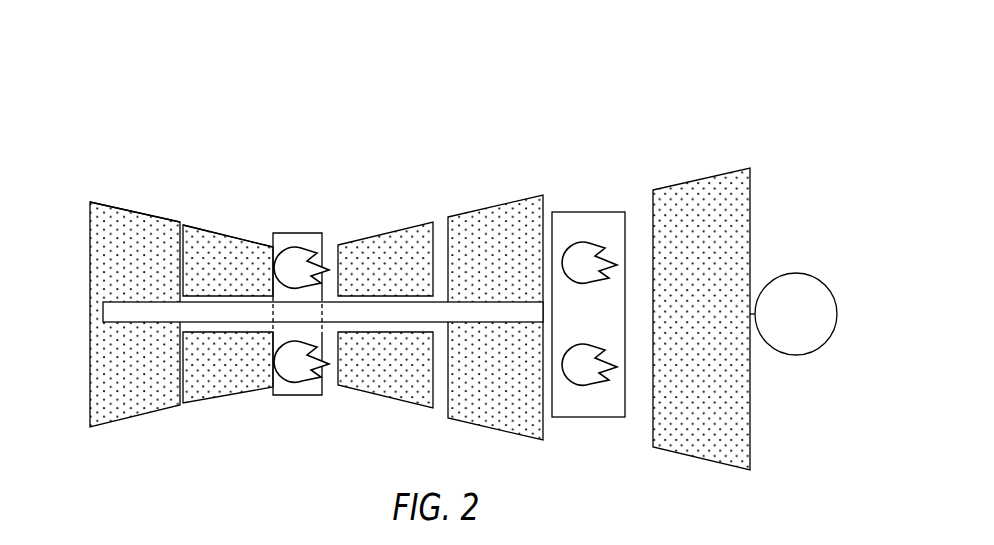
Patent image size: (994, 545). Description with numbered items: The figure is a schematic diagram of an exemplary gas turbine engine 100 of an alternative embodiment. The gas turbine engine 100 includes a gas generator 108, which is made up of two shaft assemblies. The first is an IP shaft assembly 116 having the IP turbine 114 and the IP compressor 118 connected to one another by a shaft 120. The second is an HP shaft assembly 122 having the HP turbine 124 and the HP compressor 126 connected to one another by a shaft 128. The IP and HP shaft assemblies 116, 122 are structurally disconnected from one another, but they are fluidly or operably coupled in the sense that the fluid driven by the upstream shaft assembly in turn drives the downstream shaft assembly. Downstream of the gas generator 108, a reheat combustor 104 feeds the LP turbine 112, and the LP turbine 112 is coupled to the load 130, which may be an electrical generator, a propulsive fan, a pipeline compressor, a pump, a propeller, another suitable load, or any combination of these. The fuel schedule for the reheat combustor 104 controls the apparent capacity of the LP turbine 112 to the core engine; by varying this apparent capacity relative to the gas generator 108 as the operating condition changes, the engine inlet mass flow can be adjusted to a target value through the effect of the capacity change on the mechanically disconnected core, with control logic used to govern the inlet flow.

The gas turbine engine 100 is at (447, 252).
The reheat combustor 104 is at (567, 418).
The gas generator 108 is at (165, 254).
The LP turbine 112 is at (760, 143).
The IP turbine 114 is at (515, 215).
The IP shaft assembly 116 is at (90, 201).
The IP compressor 118 is at (115, 207).
The shaft 120 is at (180, 325).
The HP shaft assembly 122 is at (185, 222).
The HP turbine 124 is at (382, 232).
The HP compressor 126 is at (213, 228).
The shaft 128 is at (329, 337).
The load 130 is at (793, 273).